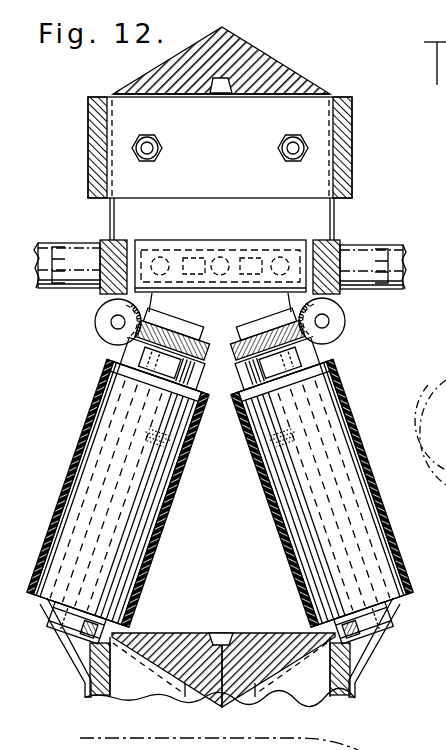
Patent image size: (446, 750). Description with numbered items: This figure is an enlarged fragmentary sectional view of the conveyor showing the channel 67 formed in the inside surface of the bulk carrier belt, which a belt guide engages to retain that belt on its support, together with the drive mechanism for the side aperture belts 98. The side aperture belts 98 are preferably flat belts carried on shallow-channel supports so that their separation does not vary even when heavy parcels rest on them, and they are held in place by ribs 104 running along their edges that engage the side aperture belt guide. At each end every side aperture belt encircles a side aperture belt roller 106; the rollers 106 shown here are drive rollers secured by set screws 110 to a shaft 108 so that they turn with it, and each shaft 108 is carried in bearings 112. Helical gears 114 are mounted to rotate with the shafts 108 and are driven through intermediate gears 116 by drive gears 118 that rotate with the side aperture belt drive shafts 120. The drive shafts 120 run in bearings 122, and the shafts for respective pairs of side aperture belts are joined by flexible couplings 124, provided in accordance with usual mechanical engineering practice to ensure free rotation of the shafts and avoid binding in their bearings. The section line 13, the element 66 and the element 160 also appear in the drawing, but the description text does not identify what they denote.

The section line 13 is at (368, 276).
The base wedge left half 66 is at (165, 633).
The channel 67 is at (238, 633).
The side aperture belts 98 is at (350, 414).
The ribs 104 is at (104, 363).
The side aperture belt roller 106 is at (351, 467).
The shaft 108 is at (118, 478).
The set screws 110 is at (165, 433).
The bearings 112 is at (187, 386).
The helical gears 114 is at (152, 320).
The intermediate gears 116 is at (347, 318).
The drive gears 118 is at (110, 240).
The side aperture belt drive shafts 120 is at (164, 246).
The bearings 122 is at (246, 246).
The flexible couplings 124 is at (72, 250).
The pivot pin left 160 is at (95, 318).